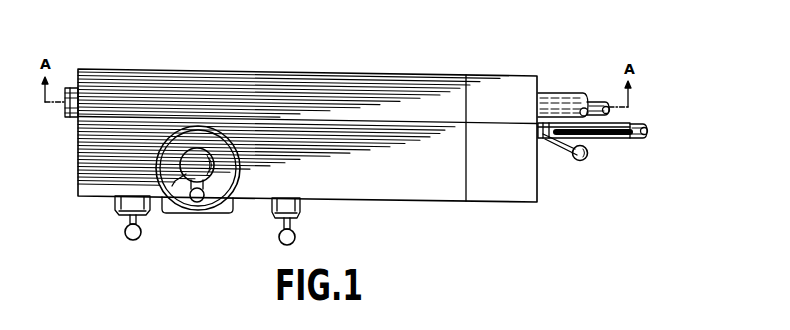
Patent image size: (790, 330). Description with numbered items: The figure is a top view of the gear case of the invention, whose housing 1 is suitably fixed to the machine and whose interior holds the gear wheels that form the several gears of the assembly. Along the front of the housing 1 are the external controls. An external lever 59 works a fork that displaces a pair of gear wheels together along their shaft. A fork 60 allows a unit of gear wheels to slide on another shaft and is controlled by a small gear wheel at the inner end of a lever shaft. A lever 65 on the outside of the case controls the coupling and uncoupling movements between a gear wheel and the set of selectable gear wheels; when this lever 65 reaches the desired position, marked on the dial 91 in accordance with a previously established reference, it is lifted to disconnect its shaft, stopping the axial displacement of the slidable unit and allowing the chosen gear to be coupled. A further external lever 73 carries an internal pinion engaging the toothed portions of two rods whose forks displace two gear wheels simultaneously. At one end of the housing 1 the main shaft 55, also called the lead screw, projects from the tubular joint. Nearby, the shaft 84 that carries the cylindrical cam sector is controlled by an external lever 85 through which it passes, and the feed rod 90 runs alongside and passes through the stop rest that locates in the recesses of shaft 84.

The housing 1 is at (341, 196).
The main shaft 55 is at (558, 93).
The external lever 59 is at (140, 237).
The fork 60 is at (594, 101).
The lever 65 is at (196, 203).
The external lever 73 is at (295, 240).
The shaft 84 is at (639, 139).
The external lever 85 is at (578, 161).
The feed rod 90 is at (601, 139).
The dial 91 is at (232, 207).